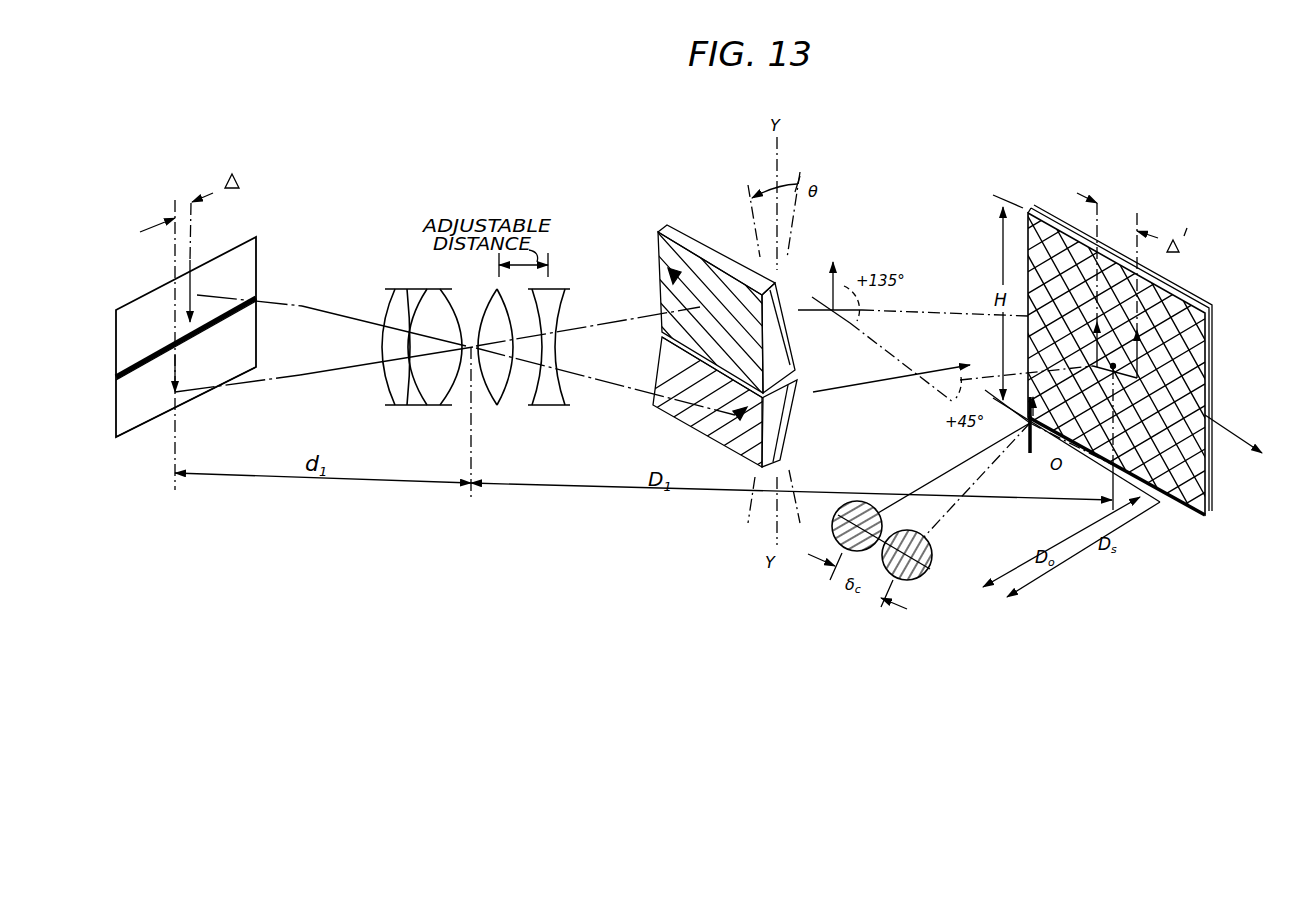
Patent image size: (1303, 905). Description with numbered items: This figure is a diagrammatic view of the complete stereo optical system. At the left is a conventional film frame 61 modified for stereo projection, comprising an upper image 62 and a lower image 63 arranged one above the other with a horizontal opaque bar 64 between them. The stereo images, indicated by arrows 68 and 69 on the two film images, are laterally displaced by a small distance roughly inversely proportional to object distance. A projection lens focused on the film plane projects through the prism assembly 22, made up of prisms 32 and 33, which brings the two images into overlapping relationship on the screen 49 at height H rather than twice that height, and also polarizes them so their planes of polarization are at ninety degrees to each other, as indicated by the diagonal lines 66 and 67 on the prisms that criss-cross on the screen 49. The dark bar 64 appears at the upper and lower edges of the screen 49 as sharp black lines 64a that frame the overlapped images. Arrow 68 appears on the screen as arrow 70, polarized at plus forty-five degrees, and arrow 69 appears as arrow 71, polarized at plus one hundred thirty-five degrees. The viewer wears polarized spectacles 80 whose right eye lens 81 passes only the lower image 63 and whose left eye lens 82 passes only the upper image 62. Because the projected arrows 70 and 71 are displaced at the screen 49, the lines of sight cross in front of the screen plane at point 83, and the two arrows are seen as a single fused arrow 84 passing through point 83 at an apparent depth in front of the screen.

The prism assembly 22 is at (719, 311).
The prism 32 is at (722, 301).
The prism 33 is at (730, 446).
The screen 49 is at (1078, 360).
The film frame 61 is at (125, 308).
The upper image 62 is at (123, 346).
The lower image 63 is at (118, 417).
The opaque bar 64 is at (117, 377).
The black lines 64a is at (1028, 213).
The diagonal lines 66 is at (660, 283).
The diagonal lines 67 is at (672, 408).
The arrow 68 is at (196, 297).
The arrow 69 is at (181, 365).
The projected arrow 70 is at (1138, 320).
The projected arrow 71 is at (1070, 335).
The polarized spectacles 80 is at (921, 578).
The right eye lens 81 is at (932, 560).
The left eye lens 82 is at (860, 501).
The crossover point 83 is at (1022, 427).
The fused arrow 84 is at (1030, 425).